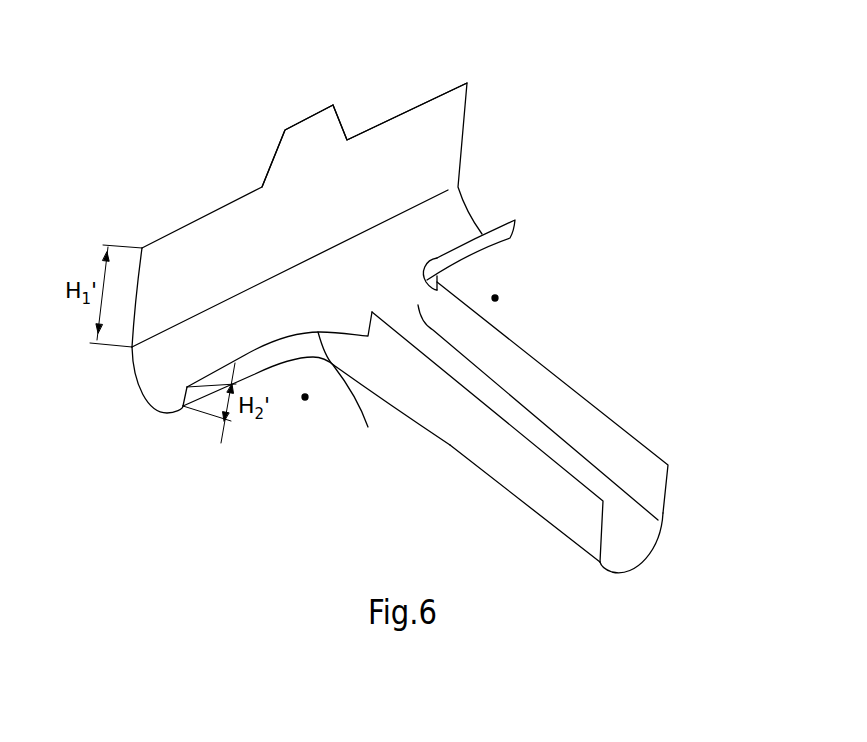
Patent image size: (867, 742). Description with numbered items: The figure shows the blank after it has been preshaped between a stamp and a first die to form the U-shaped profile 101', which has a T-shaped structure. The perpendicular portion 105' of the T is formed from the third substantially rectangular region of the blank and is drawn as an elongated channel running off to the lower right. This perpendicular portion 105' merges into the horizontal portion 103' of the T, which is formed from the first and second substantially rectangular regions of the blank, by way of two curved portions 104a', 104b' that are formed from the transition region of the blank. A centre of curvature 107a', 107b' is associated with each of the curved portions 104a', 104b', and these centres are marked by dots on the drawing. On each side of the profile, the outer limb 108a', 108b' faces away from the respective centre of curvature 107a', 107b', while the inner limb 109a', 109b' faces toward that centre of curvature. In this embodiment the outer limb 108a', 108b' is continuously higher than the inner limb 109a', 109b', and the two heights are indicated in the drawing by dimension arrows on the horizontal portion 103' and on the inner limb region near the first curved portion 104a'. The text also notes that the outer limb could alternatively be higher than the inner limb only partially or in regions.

The U-shaped profile 101' is at (392, 311).
The horizontal portion 103' is at (293, 231).
The curved portion 104a' is at (316, 405).
The curved portion 104b' is at (545, 360).
The perpendicular portion 105' is at (520, 390).
The centre of curvature 107a' is at (321, 413).
The centre of curvature 107b' is at (524, 300).
The outer limb 108a' is at (266, 139).
The outer limb 108b' is at (400, 94).
The inner limb 109a' is at (362, 397).
The inner limb 109b' is at (517, 248).